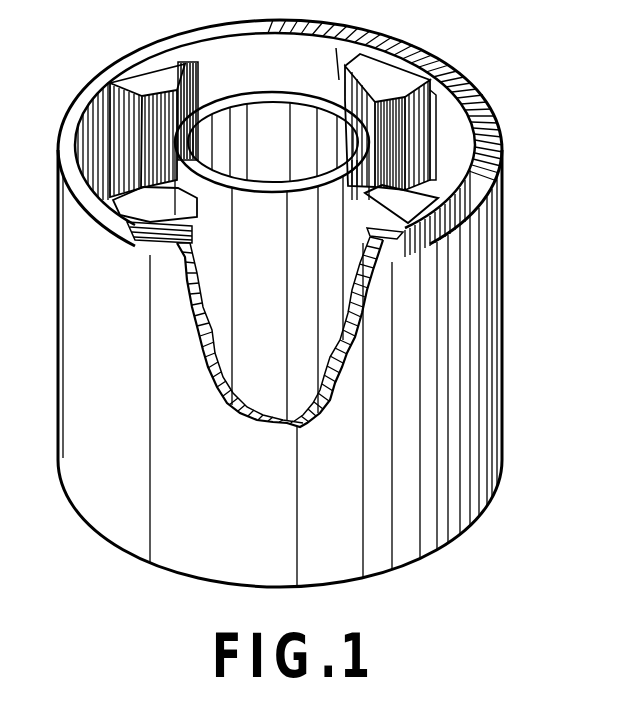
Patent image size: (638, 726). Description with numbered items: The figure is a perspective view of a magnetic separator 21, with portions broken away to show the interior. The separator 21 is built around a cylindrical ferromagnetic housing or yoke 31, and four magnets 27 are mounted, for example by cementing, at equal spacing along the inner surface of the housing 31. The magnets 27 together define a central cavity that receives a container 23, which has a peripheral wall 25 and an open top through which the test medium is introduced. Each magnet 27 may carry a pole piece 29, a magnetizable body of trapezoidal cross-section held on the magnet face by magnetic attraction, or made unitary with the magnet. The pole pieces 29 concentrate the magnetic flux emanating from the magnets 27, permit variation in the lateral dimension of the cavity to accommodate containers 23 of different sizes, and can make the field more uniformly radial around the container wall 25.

The separator 21 is at (512, 226).
The container 23 is at (218, 198).
The peripheral wall 25 is at (276, 128).
The magnets 27 is at (343, 50).
The pole pieces 29 is at (200, 85).
The cylindrical ferromagnetic housing or yoke 31 is at (503, 370).